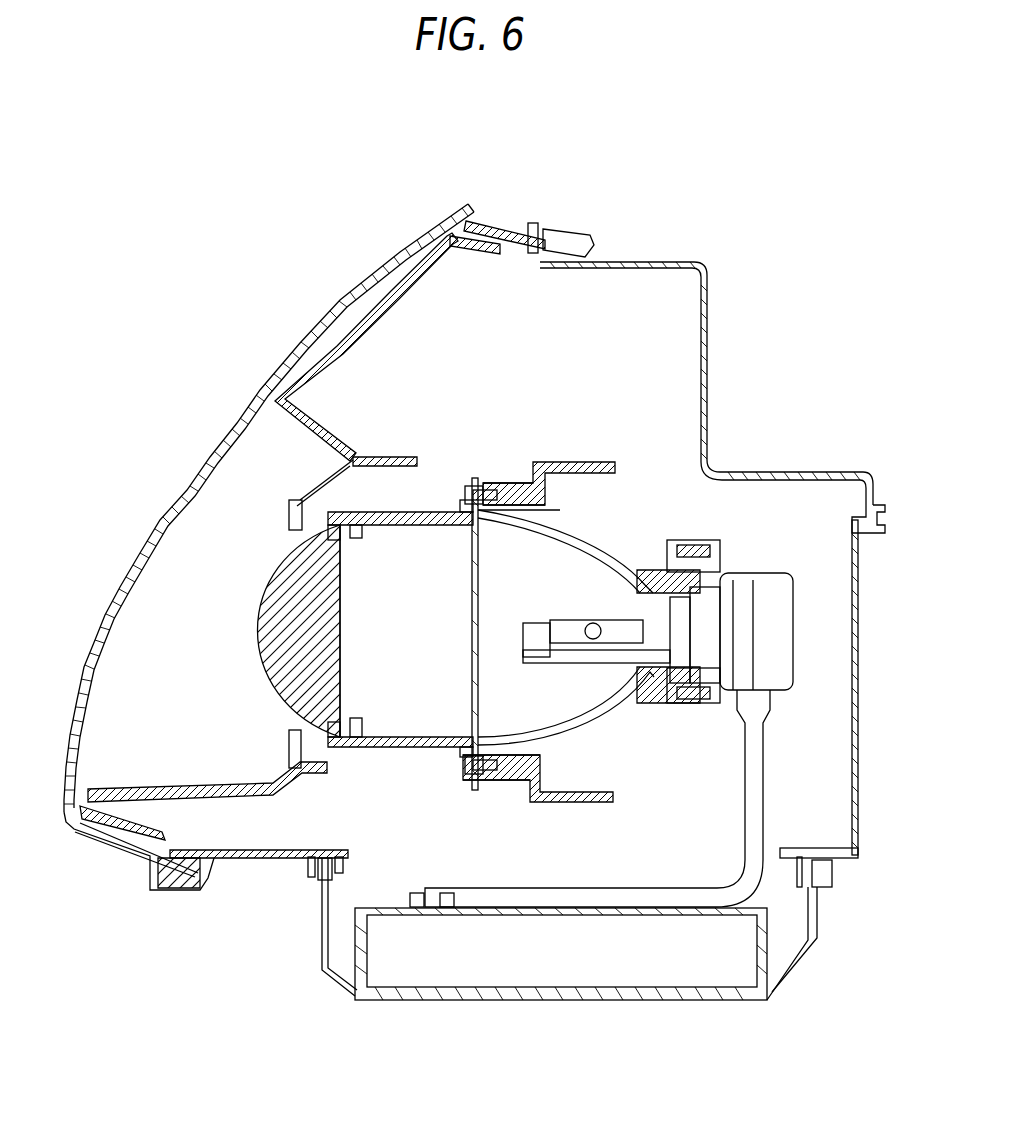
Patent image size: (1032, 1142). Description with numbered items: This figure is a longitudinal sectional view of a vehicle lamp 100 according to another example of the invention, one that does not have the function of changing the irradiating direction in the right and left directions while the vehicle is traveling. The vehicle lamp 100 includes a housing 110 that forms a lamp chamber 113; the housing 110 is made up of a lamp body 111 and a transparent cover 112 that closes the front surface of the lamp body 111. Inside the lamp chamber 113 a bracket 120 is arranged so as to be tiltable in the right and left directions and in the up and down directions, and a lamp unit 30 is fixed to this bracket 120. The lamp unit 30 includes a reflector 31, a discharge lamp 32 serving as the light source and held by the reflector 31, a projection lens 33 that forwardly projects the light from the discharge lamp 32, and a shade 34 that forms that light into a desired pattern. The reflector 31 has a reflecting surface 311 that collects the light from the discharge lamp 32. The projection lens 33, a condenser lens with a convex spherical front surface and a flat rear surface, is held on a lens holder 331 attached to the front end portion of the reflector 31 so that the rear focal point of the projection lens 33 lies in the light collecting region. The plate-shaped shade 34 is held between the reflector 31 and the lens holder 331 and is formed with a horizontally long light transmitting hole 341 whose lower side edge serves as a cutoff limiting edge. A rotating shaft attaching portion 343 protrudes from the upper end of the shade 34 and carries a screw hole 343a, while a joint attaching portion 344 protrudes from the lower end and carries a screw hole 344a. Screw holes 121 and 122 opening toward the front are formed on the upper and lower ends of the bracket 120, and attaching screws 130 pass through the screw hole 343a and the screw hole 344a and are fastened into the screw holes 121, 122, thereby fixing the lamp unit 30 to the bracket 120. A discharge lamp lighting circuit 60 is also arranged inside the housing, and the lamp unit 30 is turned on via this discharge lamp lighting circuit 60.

The vehicle lamp 100 is at (316, 177).
The housing 110 is at (645, 268).
The lamp body 111 is at (712, 348).
The transparent cover 112 is at (250, 400).
The lamp chamber 113 is at (703, 268).
The bracket 120 is at (607, 462).
The screw hole 121 is at (490, 483).
The screw hole 122 is at (481, 775).
The attaching screw 130 is at (473, 487).
The lamp unit 30 is at (622, 545).
The reflector 31 is at (603, 720).
The reflecting surface 311 is at (560, 537).
The discharge lamp 32 is at (583, 620).
The projection lens 33 is at (253, 627).
The lens holder 331 is at (428, 512).
The shade 34 is at (473, 677).
The light transmitting hole 341 is at (473, 593).
The rotating shaft attaching portion 343 is at (474, 487).
The screw hole 343a is at (462, 517).
The joint attaching portion 344 is at (478, 775).
The screw hole 344a is at (460, 747).
The discharge lamp lighting circuit 60 is at (517, 967).